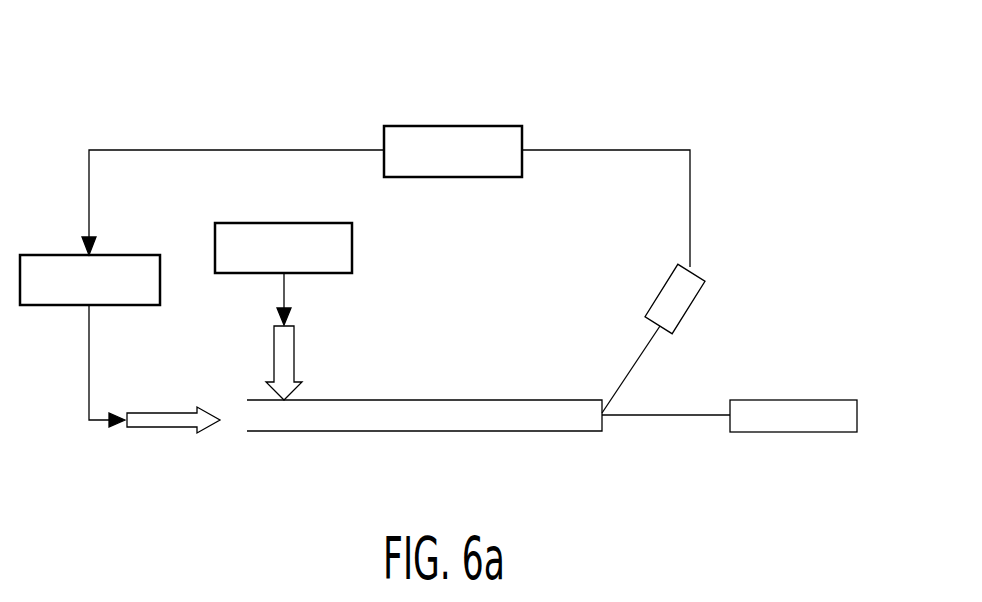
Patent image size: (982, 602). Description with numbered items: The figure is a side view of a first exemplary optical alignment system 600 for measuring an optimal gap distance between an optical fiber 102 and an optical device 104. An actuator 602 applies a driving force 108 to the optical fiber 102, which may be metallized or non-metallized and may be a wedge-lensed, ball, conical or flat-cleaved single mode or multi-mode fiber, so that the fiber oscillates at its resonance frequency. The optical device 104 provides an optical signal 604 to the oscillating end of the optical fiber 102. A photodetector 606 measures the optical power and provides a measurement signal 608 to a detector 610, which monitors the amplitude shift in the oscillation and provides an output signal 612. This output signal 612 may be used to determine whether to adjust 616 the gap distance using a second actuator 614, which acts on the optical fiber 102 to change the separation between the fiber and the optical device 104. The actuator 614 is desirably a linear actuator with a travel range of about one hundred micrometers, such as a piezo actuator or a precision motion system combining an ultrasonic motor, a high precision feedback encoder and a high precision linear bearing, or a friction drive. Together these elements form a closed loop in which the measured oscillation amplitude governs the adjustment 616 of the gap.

The optical alignment system 600 is at (660, 32).
The output signal 612 is at (232, 150).
The actuator 614 is at (134, 254).
The adjust 616 is at (165, 412).
The actuator 602 is at (353, 243).
The driving force 108 is at (294, 350).
The detector 610 is at (438, 126).
The measurement signal 608 is at (631, 150).
The photodetector 606 is at (700, 306).
The optical fiber 102 is at (360, 432).
The optical signal 604 is at (688, 418).
The optical device 104 is at (818, 400).